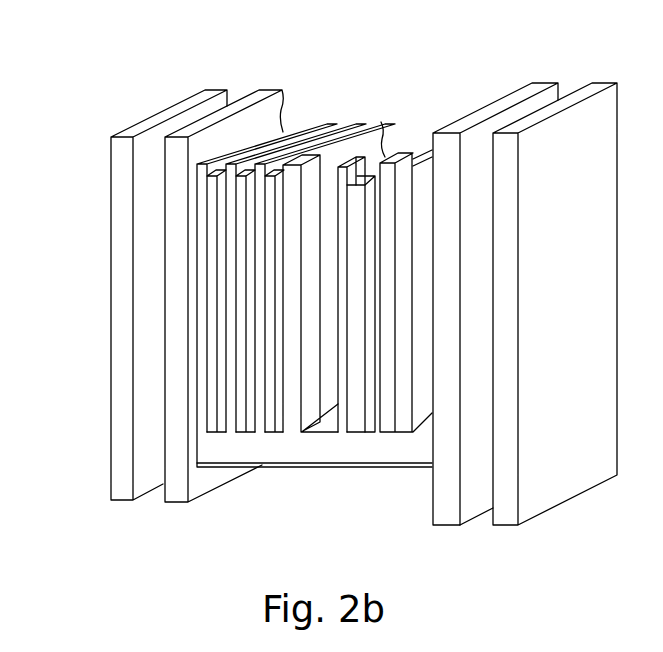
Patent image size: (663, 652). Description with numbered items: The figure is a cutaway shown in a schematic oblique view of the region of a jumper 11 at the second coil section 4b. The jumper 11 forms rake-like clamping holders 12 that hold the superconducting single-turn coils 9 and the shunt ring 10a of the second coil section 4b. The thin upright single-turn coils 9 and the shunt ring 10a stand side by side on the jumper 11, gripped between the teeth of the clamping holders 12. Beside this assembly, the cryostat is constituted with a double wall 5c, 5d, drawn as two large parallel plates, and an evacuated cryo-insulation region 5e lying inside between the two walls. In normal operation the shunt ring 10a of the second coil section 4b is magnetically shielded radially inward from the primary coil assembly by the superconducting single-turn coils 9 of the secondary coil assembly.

The second coil section 4b is at (236, 318).
The double wall 5c is at (447, 147).
The double wall 5d is at (507, 148).
The evacuated cryo-insulation region 5e is at (478, 138).
The single-turn coils 9 is at (268, 412).
The shunt ring 10a is at (355, 410).
The jumper 11 is at (282, 455).
The clamping holders 12 is at (236, 171).